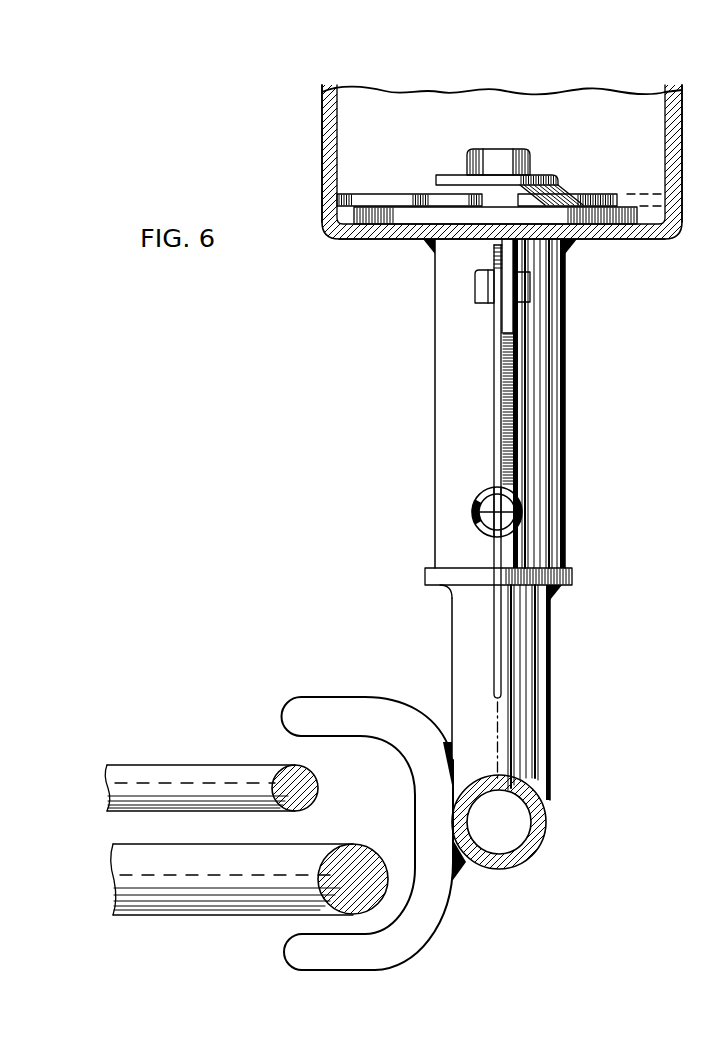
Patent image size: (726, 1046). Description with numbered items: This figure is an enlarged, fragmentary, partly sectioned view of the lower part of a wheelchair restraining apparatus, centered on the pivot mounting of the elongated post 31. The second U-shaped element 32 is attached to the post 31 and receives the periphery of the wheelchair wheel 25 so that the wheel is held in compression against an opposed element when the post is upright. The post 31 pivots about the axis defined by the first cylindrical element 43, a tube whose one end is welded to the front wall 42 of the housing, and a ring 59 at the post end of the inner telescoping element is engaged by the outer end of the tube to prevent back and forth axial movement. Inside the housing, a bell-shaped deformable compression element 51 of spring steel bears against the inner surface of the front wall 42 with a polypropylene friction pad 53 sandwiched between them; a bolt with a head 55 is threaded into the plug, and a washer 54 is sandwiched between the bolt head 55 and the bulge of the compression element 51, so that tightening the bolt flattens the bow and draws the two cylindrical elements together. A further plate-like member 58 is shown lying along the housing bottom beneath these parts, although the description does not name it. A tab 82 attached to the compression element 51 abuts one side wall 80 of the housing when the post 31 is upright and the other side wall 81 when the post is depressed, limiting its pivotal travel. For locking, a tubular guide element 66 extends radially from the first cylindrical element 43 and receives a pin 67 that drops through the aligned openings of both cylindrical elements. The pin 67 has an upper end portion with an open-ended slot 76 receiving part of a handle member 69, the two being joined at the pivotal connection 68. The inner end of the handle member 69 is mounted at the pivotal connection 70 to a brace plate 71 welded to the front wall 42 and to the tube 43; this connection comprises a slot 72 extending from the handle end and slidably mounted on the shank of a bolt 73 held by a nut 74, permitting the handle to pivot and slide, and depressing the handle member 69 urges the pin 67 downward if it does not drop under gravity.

The wheelchair wheel 25 is at (305, 855).
The post 31 is at (548, 822).
The second U-shaped element 32 is at (300, 700).
The front wall 42 is at (372, 250).
The first cylindrical element 43 is at (567, 404).
The compression element 51 is at (576, 179).
The friction pad 53 is at (618, 215).
The washer 54 is at (535, 182).
The bolt head 55 is at (494, 150).
The base plate 58 is at (618, 215).
The ring 59 is at (572, 577).
The tubular guide element 66 is at (484, 528).
The pin 67 is at (488, 488).
The pivotal connection 68 is at (520, 505).
The handle member 69 is at (492, 660).
The pivotal connection 70 is at (532, 290).
The brace plate 71 is at (517, 330).
The slot 72 is at (492, 252).
The bolt 73 is at (478, 288).
The nut 74 is at (527, 280).
The open-ended slot 76 is at (493, 510).
The side wall 80 is at (339, 96).
The side wall 81 is at (668, 98).
The tab 82 is at (356, 196).